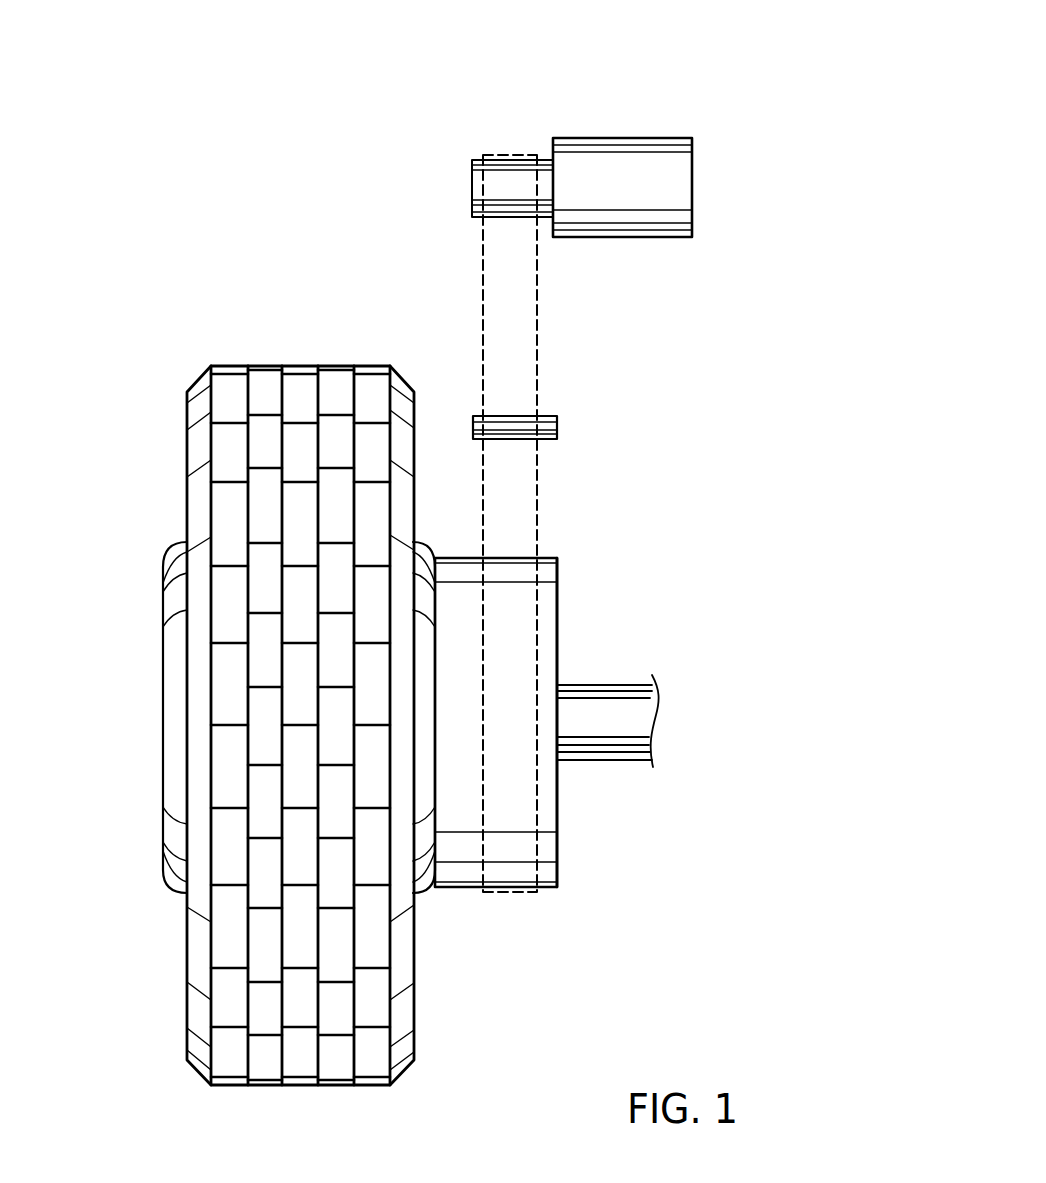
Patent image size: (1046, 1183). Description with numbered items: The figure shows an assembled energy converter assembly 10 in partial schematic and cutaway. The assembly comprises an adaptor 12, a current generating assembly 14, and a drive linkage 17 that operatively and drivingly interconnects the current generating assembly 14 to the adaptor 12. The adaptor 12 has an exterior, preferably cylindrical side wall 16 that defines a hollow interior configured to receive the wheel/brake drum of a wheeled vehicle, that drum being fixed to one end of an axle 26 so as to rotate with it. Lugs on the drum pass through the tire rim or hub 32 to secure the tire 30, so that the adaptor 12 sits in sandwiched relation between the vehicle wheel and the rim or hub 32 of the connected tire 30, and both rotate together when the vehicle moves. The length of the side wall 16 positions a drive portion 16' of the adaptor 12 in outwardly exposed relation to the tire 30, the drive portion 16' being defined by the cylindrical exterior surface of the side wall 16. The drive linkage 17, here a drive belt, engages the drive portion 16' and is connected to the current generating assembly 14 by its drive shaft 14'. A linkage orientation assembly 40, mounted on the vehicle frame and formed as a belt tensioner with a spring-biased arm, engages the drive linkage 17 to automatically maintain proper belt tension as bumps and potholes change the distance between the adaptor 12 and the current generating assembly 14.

The energy converter assembly 10 is at (727, 303).
The adaptor 12 is at (460, 793).
The current generating assembly 14 is at (659, 126).
The drive shaft 14' is at (445, 175).
The side wall 16 is at (492, 657).
The drive portion 16' is at (632, 722).
The drive linkage 17 is at (515, 452).
The axle 26 is at (620, 772).
The tire 30 is at (372, 998).
The tire rim or hub 32 is at (178, 727).
The linkage orientation assembly 40 is at (545, 408).